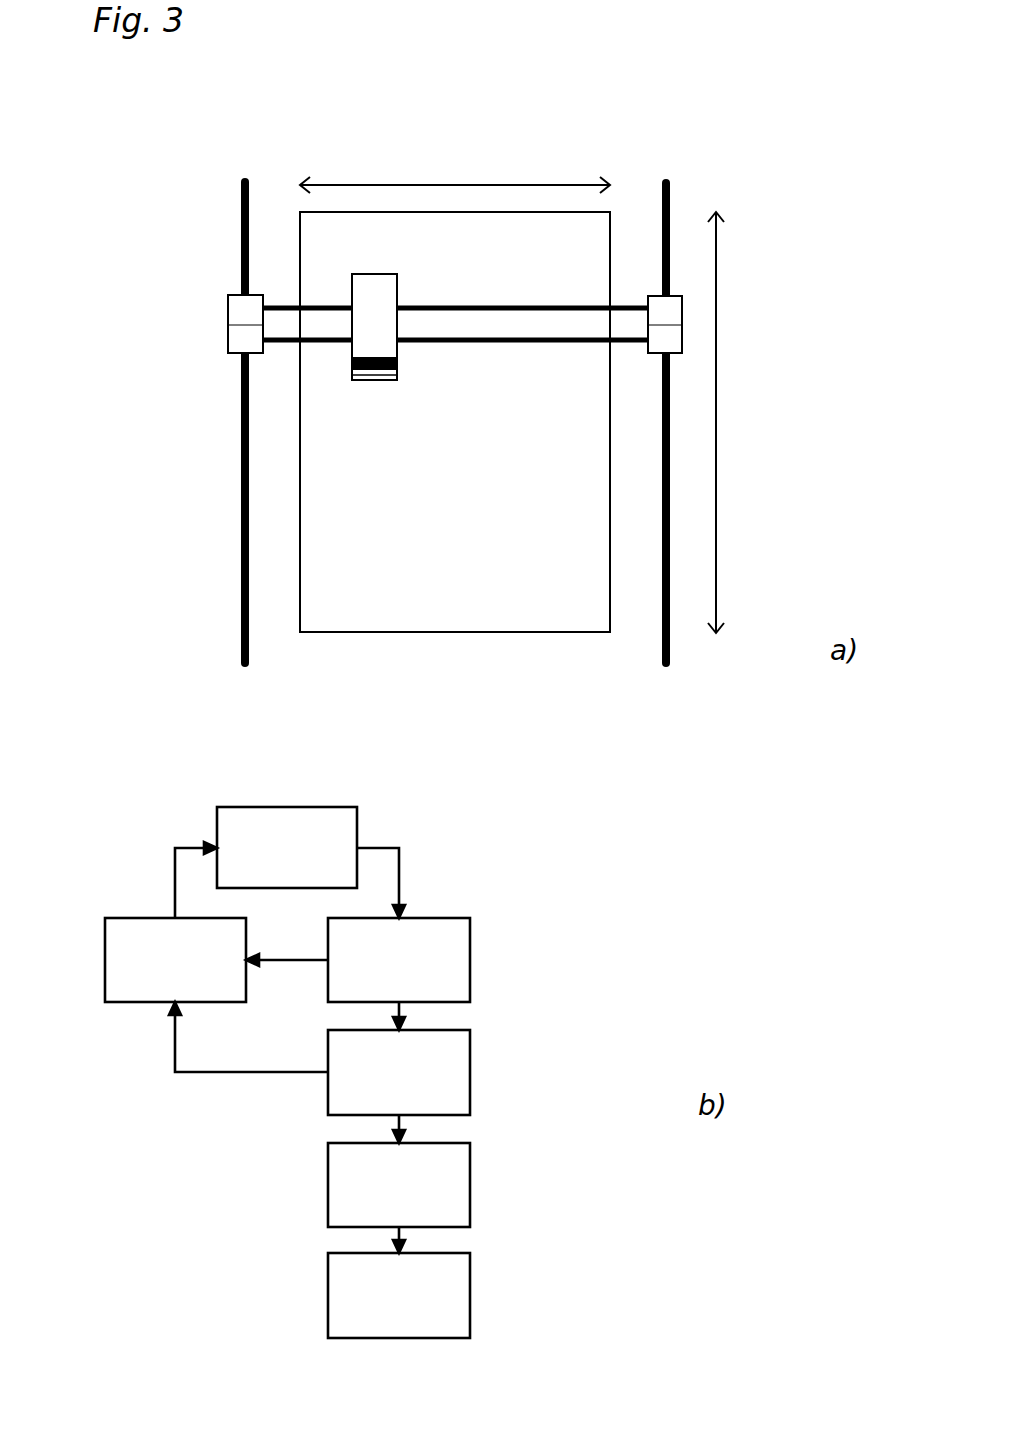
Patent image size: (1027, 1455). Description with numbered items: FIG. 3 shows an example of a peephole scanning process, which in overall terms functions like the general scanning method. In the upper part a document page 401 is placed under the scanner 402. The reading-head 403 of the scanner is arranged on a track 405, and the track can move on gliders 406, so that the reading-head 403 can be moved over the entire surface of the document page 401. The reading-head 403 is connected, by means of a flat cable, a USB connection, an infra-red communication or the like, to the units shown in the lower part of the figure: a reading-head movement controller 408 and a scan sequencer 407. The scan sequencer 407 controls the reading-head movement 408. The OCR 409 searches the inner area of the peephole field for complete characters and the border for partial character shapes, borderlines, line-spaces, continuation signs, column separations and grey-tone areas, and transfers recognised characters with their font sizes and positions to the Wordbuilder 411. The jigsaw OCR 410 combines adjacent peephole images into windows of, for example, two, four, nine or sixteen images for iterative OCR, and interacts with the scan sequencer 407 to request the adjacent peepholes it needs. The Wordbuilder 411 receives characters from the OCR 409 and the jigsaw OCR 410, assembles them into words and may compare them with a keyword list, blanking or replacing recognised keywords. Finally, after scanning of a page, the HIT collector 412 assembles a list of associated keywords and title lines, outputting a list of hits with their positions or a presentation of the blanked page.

The document page 401 is at (597, 632).
The scanner 402 is at (292, 128).
The reading-head 403 is at (342, 373).
The track 405 is at (632, 340).
The glider 406 is at (243, 233).
The scan sequencer 407 is at (105, 960).
The reading-head movement controller 408 is at (317, 807).
The OCR 409 is at (470, 958).
The jigsaw OCR 410 is at (470, 1070).
The Wordbuilder 411 is at (470, 1182).
The HIT collector 412 is at (470, 1293).